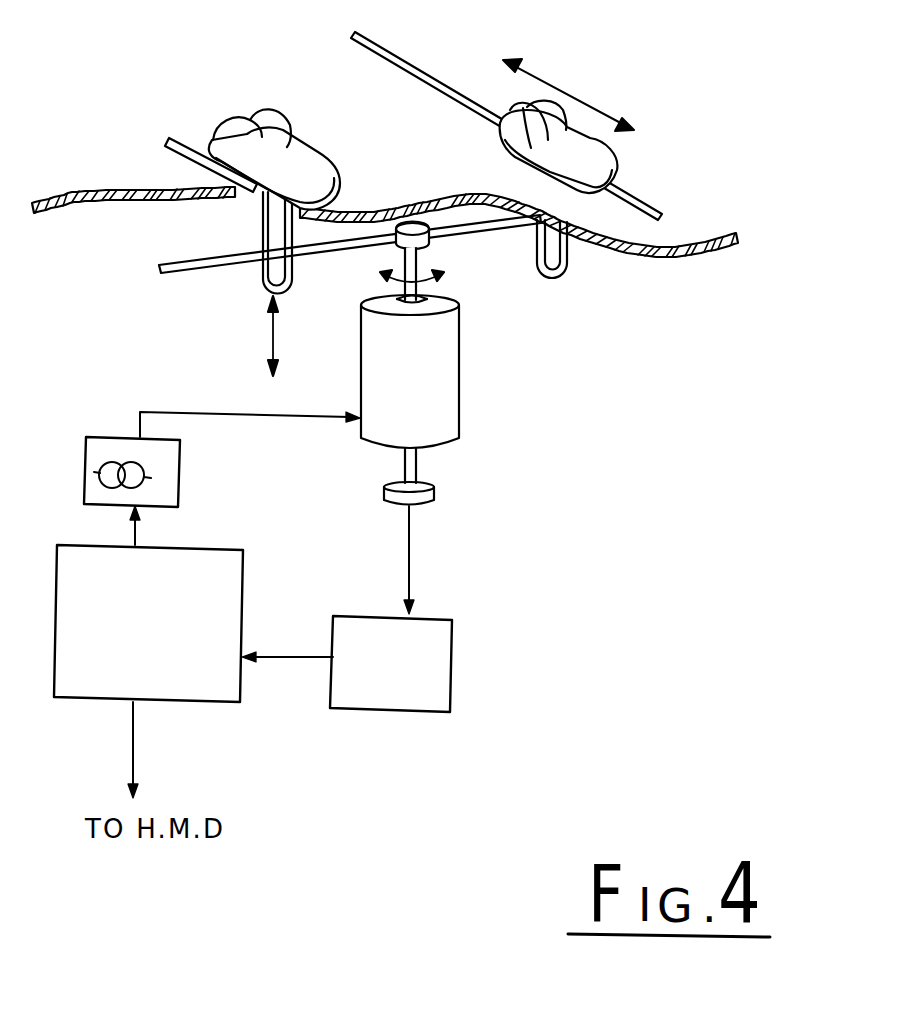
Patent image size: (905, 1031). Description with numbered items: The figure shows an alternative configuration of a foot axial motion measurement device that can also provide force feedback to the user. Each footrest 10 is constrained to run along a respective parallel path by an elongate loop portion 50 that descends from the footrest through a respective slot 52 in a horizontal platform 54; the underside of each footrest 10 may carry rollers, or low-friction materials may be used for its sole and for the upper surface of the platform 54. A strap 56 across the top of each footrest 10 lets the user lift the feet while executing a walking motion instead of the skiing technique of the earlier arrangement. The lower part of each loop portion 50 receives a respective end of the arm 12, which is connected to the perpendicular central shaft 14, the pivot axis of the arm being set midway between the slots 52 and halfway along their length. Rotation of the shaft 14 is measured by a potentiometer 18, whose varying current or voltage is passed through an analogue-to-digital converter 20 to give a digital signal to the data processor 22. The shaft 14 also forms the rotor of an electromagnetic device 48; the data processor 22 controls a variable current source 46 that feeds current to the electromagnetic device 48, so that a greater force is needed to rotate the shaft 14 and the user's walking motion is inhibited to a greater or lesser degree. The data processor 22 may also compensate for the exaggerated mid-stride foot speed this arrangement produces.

The footrest 10 is at (300, 173).
The arm 12 is at (187, 272).
The central shaft 14 is at (417, 263).
The potentiometer 18 is at (428, 495).
The analogue-to-digital converter 20 is at (452, 655).
The data processor 22 is at (230, 585).
The variable current source 46 is at (170, 462).
The electromagnetic device 48 is at (442, 402).
The loop portion 50 is at (291, 287).
The slot 52 is at (185, 151).
The horizontal platform 54 is at (418, 157).
The strap 56 is at (540, 117).